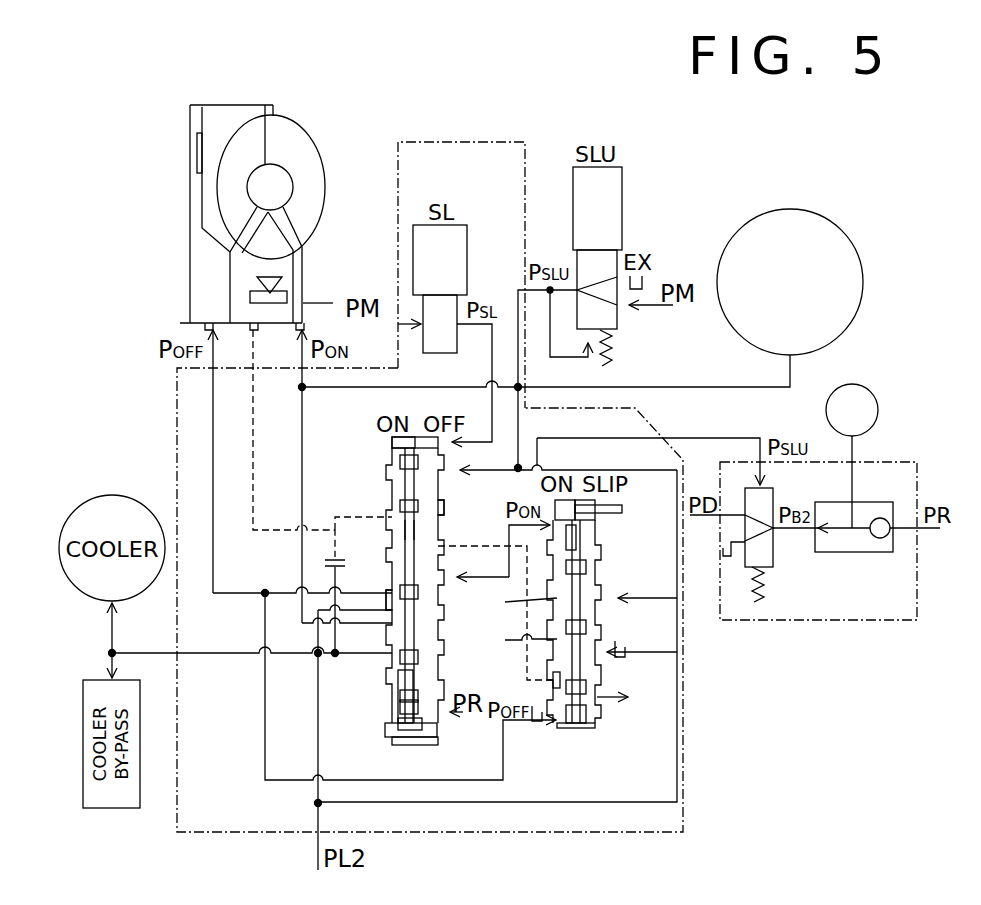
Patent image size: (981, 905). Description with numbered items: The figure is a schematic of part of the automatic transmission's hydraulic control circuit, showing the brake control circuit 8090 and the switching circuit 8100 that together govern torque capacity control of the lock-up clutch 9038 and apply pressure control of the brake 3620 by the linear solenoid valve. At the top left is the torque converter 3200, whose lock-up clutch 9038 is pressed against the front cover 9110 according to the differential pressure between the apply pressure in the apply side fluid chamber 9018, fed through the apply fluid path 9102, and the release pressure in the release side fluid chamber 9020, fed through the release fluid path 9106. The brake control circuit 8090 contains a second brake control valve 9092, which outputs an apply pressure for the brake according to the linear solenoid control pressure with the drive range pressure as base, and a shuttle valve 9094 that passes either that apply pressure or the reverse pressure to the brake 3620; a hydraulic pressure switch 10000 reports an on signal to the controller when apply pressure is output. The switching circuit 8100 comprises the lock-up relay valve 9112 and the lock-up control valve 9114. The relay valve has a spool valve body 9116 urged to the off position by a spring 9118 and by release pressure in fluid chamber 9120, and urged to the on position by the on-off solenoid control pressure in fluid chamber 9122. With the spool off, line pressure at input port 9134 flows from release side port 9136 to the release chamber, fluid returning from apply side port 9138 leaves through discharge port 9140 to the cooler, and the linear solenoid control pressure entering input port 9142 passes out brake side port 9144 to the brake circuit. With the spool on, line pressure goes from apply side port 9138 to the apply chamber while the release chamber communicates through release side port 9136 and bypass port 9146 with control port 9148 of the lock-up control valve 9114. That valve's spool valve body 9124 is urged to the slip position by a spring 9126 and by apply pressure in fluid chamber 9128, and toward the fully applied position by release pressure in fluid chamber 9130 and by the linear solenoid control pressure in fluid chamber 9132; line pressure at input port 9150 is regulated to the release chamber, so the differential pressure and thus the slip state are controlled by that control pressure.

The torque converter 3200 is at (307, 121).
The apply side fluid chamber 9018 is at (238, 110).
The lock-up clutch 9038 is at (208, 128).
The front cover 9110 is at (190, 122).
The release side fluid chamber 9020 is at (203, 263).
The release fluid path 9106 is at (212, 322).
The apply fluid path 9102 is at (307, 267).
The switching circuit 8100 is at (483, 140).
The hydraulic pressure switch 10000 is at (825, 186).
The B2 brake 3620 is at (893, 373).
The B2 brake control circuit 8090 is at (768, 625).
The second brake control valve 9092 is at (778, 575).
The shuttle valve 9094 is at (856, 562).
The input port 9142 is at (453, 464).
The fluid chamber 9122 is at (393, 447).
The release side port 9136 is at (390, 590).
The input port 9134 is at (389, 606).
The apply side port 9138 is at (392, 628).
The discharge port 9140 is at (389, 704).
The lock-up relay valve 9112 is at (390, 714).
The brake side port 9144 is at (470, 506).
The spool valve body 9116 is at (423, 523).
The bypass port 9146 is at (496, 553).
The fluid chamber 9132 is at (499, 604).
The control port 9148 is at (499, 639).
The fluid chamber 9120 is at (422, 703).
The spring 9118 is at (430, 728).
The fluid chamber 9128 is at (590, 525).
The spring 9126 is at (582, 553).
The spool valve body 9124 is at (592, 620).
The input port 9150 is at (598, 655).
The fluid chamber 9130 is at (595, 723).
The lock-up control valve 9114 is at (580, 736).